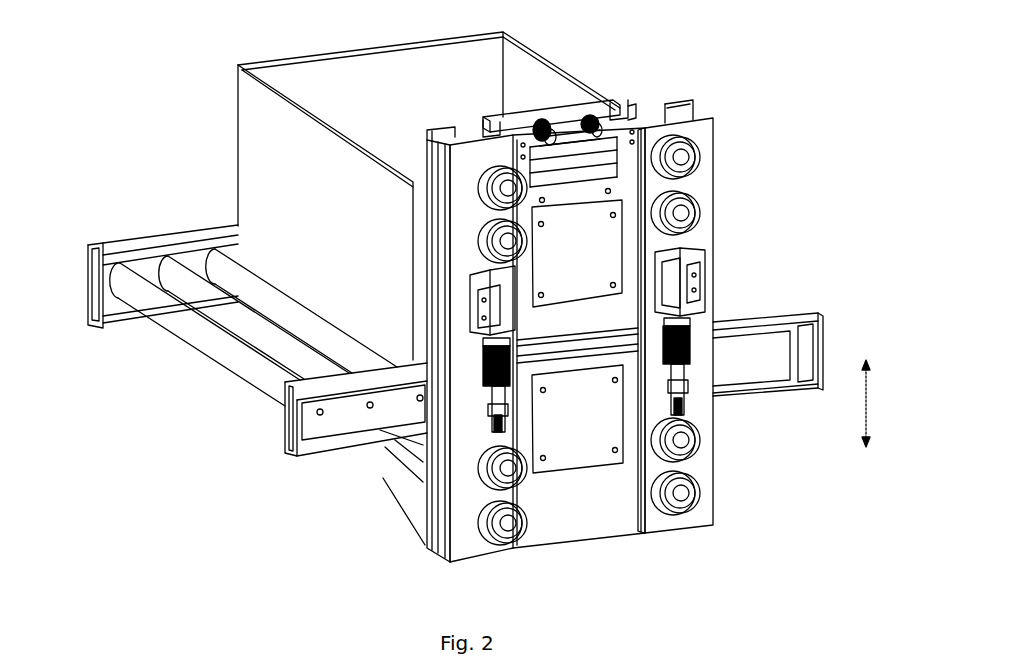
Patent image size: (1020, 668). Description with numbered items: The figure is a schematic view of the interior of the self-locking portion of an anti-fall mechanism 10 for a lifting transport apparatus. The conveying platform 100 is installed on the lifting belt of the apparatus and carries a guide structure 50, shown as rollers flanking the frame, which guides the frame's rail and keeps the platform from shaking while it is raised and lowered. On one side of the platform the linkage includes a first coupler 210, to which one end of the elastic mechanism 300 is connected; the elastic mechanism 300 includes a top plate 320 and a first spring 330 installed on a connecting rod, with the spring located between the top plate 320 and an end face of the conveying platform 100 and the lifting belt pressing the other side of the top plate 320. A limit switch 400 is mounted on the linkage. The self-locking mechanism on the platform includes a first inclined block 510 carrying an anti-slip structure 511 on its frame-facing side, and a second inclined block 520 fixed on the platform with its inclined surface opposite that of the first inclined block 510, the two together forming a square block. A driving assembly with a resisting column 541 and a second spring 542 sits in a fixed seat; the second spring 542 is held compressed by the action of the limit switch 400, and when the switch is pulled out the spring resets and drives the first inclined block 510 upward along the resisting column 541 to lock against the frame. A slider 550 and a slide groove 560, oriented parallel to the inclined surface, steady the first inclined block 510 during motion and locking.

The anti-fall mechanism 10 is at (132, 54).
The conveying platform 100 is at (588, 518).
The first coupler 210 is at (480, 113).
The elastic mechanism 300 is at (600, 110).
The top plate 320 is at (585, 127).
The first spring 330 is at (530, 110).
The limit switch 400 is at (485, 268).
The guide structure 50 is at (697, 153).
The first inclined block 510 is at (667, 300).
The anti-slip structure 511 is at (765, 316).
The second inclined block 520 is at (700, 256).
The resisting column 541 is at (683, 392).
The second spring 542 is at (713, 395).
The slider 550 is at (690, 270).
The slide groove 560 is at (713, 350).